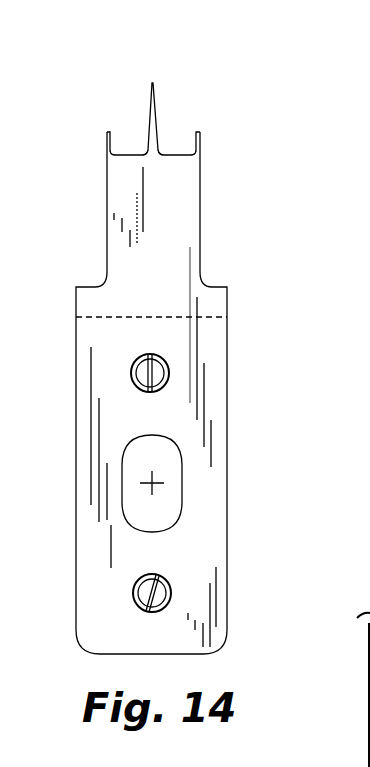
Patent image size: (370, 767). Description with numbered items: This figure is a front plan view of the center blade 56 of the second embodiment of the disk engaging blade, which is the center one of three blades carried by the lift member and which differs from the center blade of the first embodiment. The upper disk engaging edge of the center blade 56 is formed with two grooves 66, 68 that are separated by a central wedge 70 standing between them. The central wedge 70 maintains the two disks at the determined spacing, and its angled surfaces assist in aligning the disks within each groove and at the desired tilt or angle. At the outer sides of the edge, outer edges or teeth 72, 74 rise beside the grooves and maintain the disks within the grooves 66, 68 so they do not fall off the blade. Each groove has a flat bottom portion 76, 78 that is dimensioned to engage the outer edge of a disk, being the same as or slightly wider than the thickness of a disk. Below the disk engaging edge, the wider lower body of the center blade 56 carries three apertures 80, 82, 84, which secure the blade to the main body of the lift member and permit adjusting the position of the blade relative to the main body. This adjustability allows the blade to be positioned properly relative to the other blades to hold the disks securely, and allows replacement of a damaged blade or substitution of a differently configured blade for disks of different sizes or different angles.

The center blade 56 is at (220, 437).
The groove 66 is at (133, 140).
The groove 68 is at (178, 133).
The central wedge 70 is at (152, 83).
The outer edge or tooth 72 is at (107, 139).
The outer edge or tooth 74 is at (200, 143).
The flat bottom portion 76 is at (126, 157).
The flat bottom portion 78 is at (173, 157).
The aperture 80 is at (167, 367).
The aperture 82 is at (158, 518).
The aperture 84 is at (170, 585).